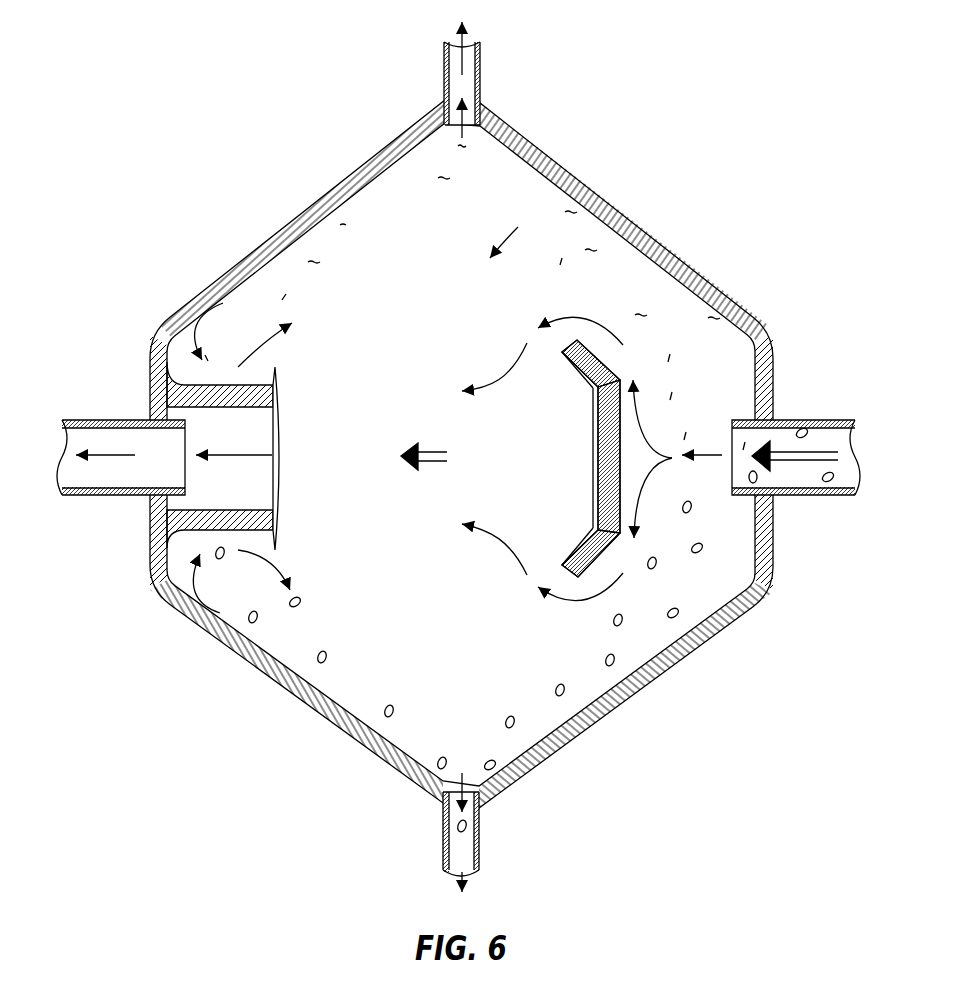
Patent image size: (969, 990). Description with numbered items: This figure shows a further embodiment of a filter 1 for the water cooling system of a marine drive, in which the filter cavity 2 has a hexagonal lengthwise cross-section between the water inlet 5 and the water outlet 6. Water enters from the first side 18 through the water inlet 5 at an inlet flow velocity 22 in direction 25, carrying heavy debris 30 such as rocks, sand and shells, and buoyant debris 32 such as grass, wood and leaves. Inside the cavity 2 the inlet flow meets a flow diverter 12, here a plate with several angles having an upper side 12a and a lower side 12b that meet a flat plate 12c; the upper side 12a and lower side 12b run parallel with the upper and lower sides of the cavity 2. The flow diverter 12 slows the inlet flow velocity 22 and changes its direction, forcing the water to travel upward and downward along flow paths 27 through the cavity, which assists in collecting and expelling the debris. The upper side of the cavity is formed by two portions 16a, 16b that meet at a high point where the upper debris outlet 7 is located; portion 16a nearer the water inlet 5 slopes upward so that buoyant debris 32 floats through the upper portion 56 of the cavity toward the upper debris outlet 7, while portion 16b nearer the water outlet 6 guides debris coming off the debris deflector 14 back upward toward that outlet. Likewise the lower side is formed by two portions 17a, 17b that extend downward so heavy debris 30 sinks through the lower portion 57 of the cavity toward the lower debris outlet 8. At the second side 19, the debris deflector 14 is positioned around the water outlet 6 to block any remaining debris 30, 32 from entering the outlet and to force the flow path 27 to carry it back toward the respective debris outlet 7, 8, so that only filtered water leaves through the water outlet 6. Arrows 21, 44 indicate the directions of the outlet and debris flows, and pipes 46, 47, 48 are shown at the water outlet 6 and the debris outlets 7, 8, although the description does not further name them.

The filter 1 is at (658, 152).
The cavity 2 is at (511, 234).
The water inlet 5 is at (777, 418).
The water outlet 6 is at (168, 418).
The upper debris outlet 7 is at (480, 105).
The lower debris outlet 8 is at (480, 812).
The flow diverter 12 is at (613, 417).
The upper side of flow diverter 12a is at (580, 373).
The lower side of flow diverter 12b is at (585, 548).
The flat plate 12c is at (602, 455).
The debris deflector 14 is at (280, 398).
The upper side portion closer to water inlet 16a is at (645, 233).
The upper side portion closer to water outlet 16b is at (305, 212).
The lower side portion 17a is at (645, 683).
The lower side portion 17b is at (315, 713).
The first side 18 is at (768, 367).
The second side 19 is at (148, 387).
The outlet flow 21 is at (440, 452).
The inlet flow velocity 22 is at (812, 448).
The inlet flow direction 25 is at (707, 463).
The flow path 27 is at (577, 318).
The heavy debris 30 is at (303, 597).
The buoyant debris 32 is at (408, 173).
The flow direction 44 is at (462, 42).
The outlet pipe 46 is at (93, 420).
The upper vent pipe 47 is at (480, 72).
The lower drain pipe 48 is at (480, 842).
The upper portion 56 is at (218, 208).
The lower portion 57 is at (226, 713).